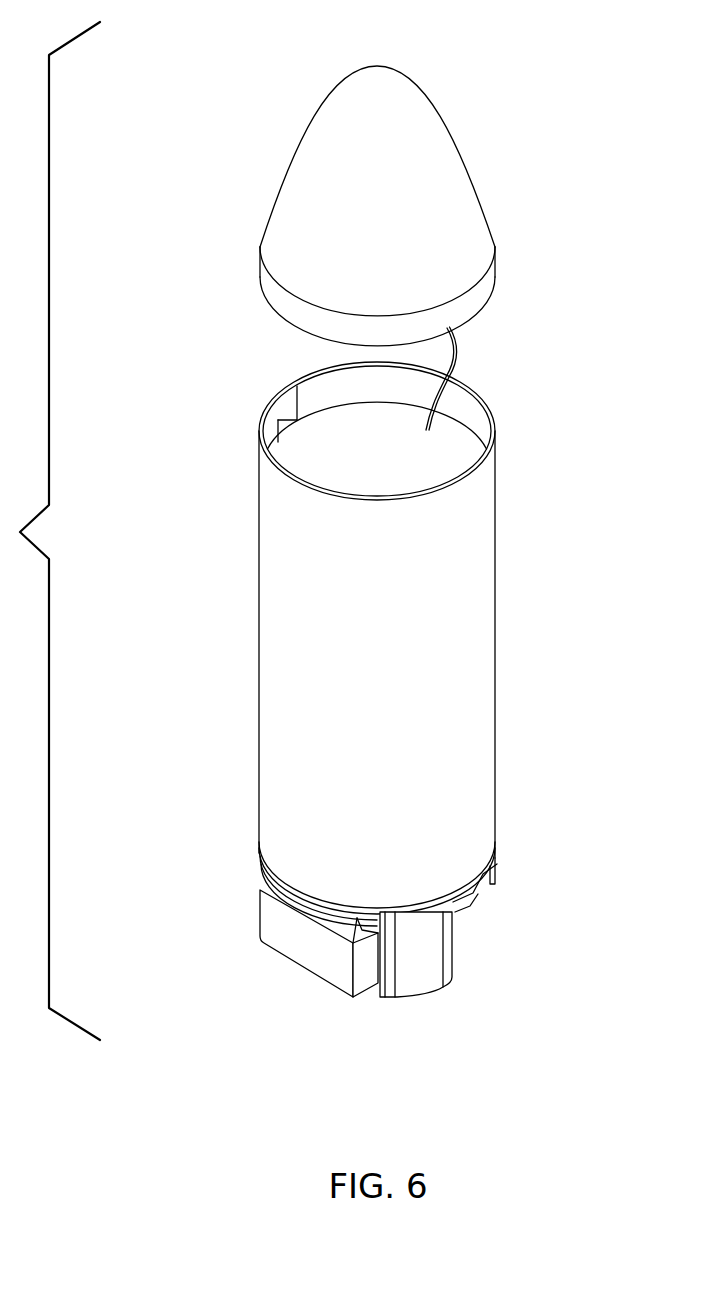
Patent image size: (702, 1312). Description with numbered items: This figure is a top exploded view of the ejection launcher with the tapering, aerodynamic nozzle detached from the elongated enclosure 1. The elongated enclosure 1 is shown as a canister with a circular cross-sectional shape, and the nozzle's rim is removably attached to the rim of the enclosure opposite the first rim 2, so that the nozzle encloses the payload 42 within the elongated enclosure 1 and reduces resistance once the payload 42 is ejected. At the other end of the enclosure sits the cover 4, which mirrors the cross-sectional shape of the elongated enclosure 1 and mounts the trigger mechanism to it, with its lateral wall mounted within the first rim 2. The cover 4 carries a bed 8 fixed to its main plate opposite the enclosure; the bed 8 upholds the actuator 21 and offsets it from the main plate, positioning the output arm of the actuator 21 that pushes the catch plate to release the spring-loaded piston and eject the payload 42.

The elongated enclosure 1 is at (248, 668).
The first rim 2 is at (490, 410).
The cover 4 is at (255, 853).
The bed 8 is at (457, 965).
The actuator 21 is at (255, 920).
The payload 42 is at (273, 404).